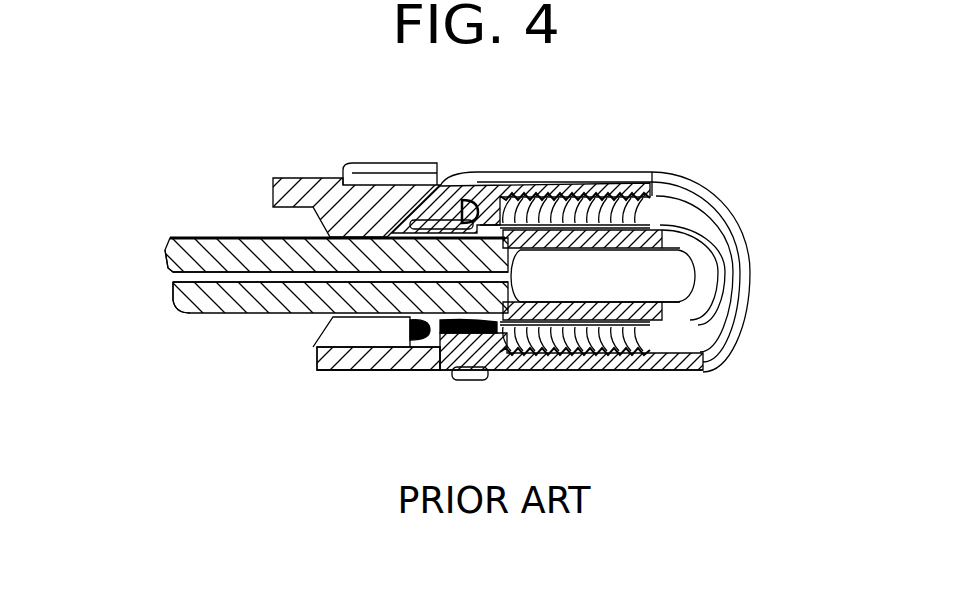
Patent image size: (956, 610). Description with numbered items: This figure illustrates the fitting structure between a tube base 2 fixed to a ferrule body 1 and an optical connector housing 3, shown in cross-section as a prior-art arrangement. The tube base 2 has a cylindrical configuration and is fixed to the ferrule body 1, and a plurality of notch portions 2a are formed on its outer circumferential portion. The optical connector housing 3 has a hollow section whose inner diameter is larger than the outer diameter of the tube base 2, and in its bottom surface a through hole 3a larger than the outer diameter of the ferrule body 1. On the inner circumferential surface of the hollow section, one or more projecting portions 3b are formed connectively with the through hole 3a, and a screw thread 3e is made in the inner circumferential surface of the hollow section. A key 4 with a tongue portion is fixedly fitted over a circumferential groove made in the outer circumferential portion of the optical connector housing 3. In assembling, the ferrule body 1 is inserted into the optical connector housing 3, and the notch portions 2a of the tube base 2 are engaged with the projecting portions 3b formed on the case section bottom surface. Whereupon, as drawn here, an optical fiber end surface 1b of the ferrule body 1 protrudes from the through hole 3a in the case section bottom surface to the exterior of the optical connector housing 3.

The ferrule body 1 is at (213, 305).
The optical fiber end surface 1b is at (175, 300).
The tube base 2 is at (583, 330).
The notch portions 2a is at (493, 200).
The optical connector housing 3 is at (310, 180).
The through hole 3a is at (423, 323).
The projecting portions 3b is at (468, 368).
The screw thread 3e is at (652, 353).
The key 4 is at (392, 176).